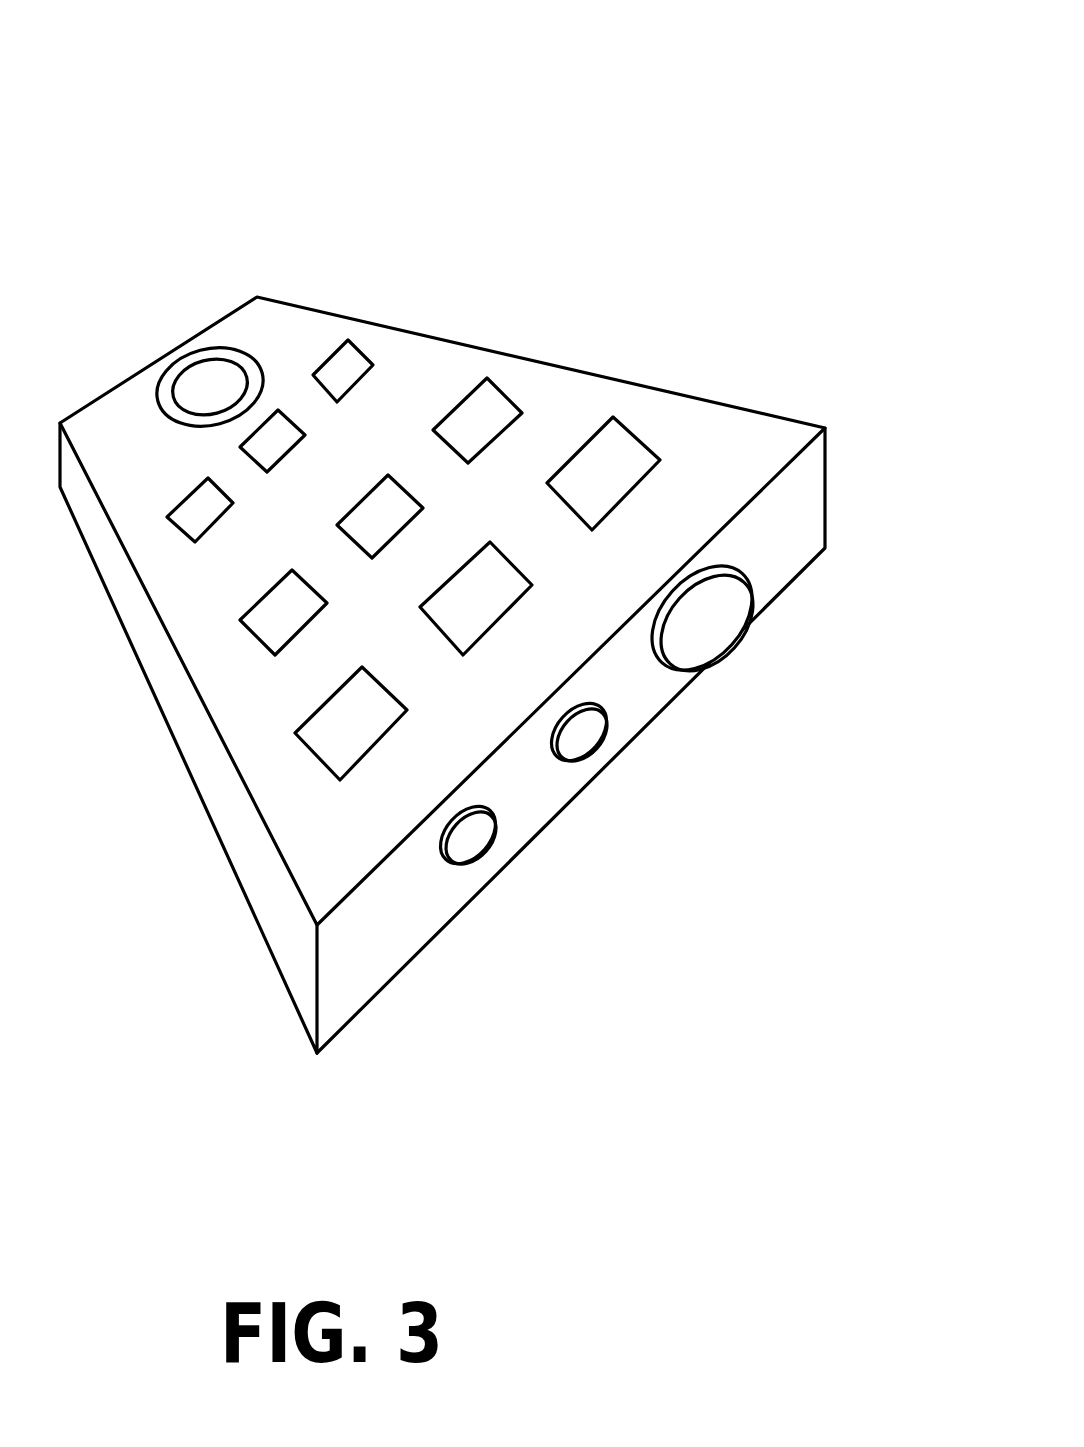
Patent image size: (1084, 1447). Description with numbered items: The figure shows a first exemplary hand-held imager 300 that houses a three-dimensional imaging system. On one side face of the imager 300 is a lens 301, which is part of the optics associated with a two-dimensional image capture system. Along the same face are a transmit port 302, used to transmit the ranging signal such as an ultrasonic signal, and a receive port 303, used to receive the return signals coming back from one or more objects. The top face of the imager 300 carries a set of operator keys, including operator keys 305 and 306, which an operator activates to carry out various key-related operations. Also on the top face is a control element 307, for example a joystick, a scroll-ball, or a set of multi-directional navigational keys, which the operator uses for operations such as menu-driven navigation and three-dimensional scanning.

The hand-held imager 300 is at (733, 108).
The lens 301 is at (772, 600).
The transmit port 302 is at (604, 731).
The receive port 303 is at (494, 833).
The operator key 305 is at (618, 457).
The operator key 306 is at (492, 398).
The control element 307 is at (212, 378).